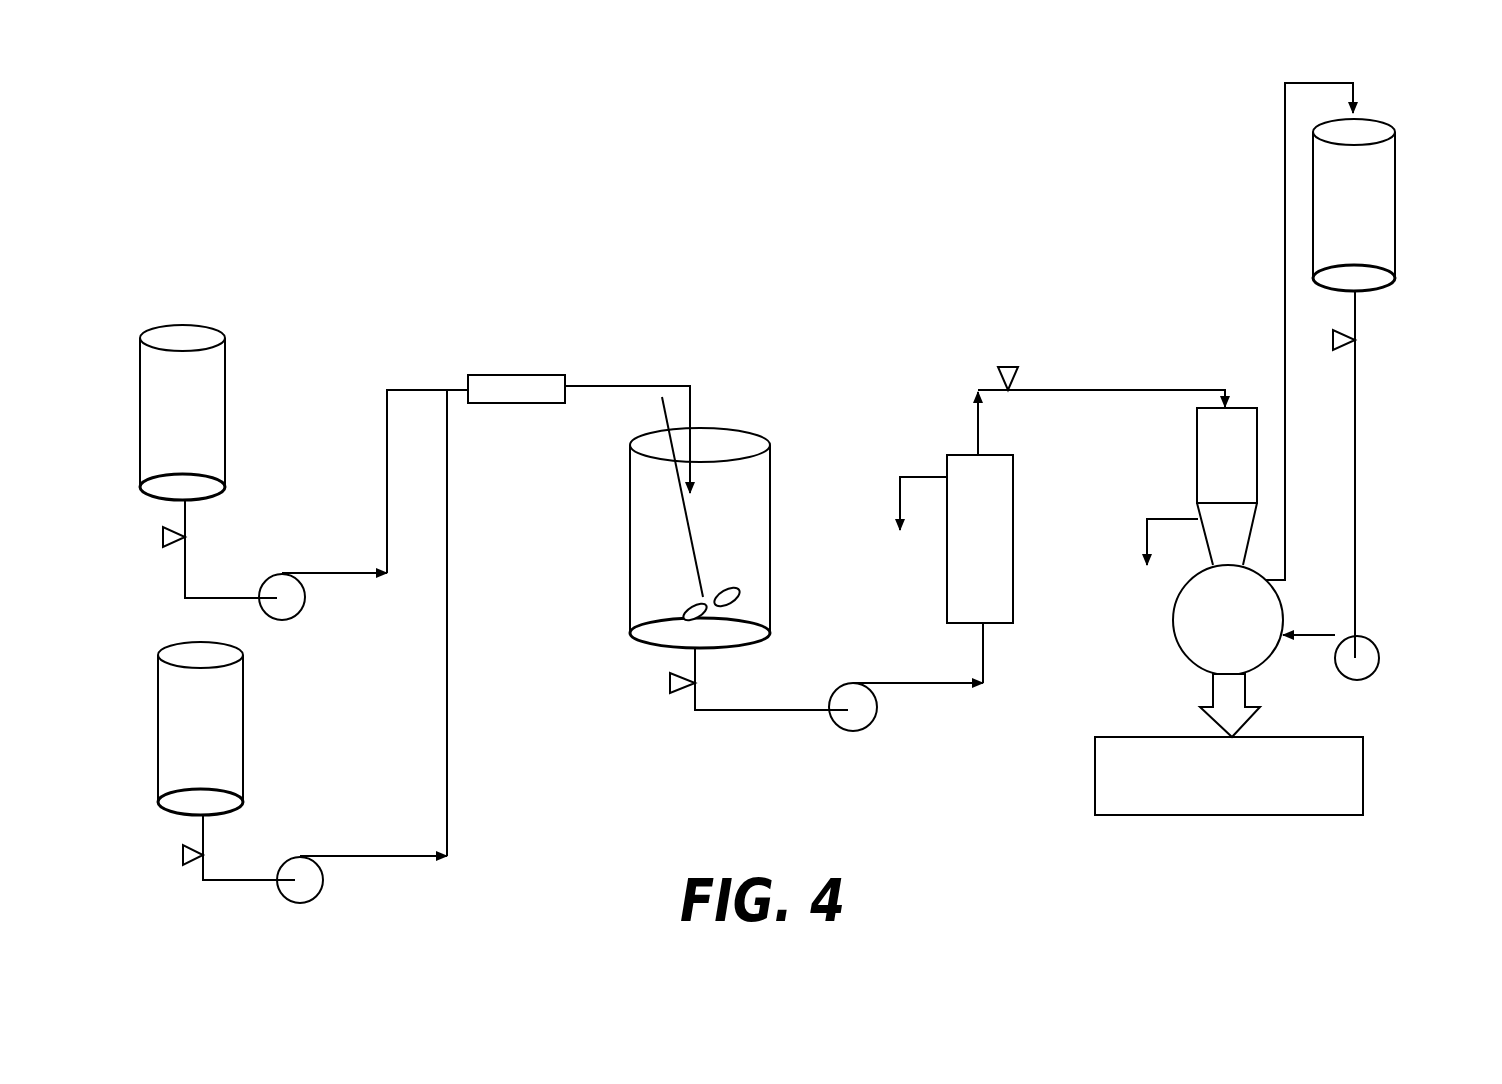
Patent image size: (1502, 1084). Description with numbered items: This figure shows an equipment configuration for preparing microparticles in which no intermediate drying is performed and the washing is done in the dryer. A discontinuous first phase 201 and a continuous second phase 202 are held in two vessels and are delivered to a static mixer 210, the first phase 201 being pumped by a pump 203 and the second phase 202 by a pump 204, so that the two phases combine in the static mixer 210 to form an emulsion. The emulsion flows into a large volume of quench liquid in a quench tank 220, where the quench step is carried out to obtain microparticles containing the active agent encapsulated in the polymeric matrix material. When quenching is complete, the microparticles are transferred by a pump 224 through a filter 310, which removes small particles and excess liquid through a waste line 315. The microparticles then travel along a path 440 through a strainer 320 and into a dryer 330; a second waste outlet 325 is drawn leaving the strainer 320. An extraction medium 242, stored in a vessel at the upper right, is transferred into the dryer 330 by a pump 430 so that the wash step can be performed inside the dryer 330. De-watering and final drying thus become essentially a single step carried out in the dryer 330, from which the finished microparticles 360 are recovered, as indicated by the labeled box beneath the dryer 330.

The first phase 201 is at (225, 400).
The second phase 202 is at (243, 740).
The pump 203 is at (282, 572).
The pump 204 is at (322, 884).
The static mixer 210 is at (503, 403).
The quench tank 220 is at (770, 537).
The pump 224 is at (875, 720).
The filter 310 is at (1013, 543).
The waste line 315 is at (918, 477).
The strainer 320 is at (1258, 472).
The waste line 325 is at (1165, 519).
The dryer 330 is at (1280, 595).
The finished microparticles 360 is at (1363, 778).
The pump 430 is at (1375, 645).
The path 440 is at (1045, 390).
The extraction medium 242 is at (1395, 180).